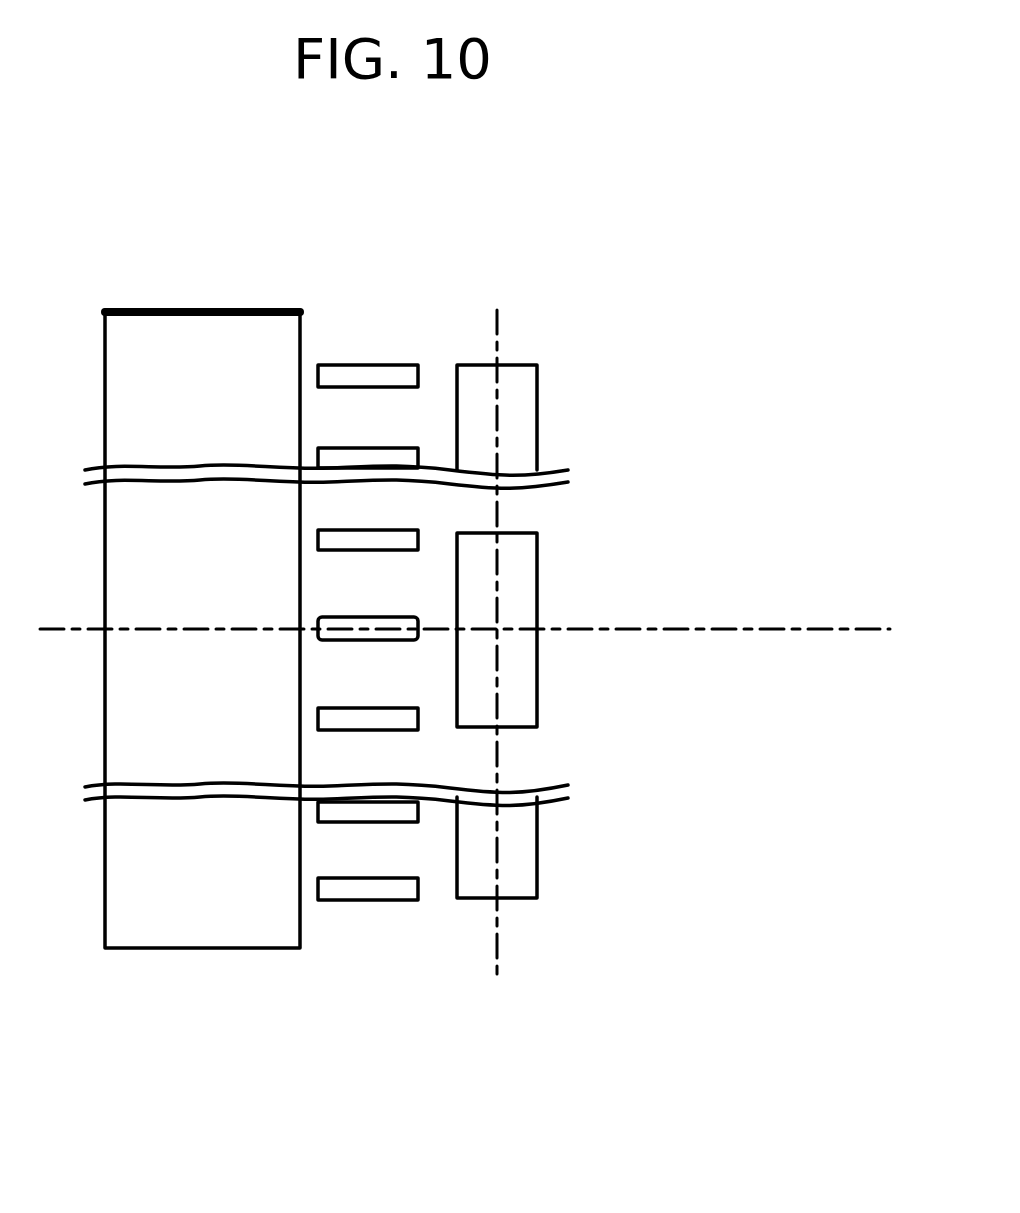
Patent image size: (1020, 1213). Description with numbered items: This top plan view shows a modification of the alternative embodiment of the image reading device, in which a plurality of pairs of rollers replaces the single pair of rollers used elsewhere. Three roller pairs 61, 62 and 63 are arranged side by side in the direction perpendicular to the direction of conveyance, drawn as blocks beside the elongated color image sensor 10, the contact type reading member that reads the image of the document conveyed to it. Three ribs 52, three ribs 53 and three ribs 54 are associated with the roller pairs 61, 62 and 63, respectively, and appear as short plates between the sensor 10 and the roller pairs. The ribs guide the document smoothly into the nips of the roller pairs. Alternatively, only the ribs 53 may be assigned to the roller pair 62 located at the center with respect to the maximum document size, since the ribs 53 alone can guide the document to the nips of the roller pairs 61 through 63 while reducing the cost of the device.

The color image sensor 10 is at (165, 318).
The ribs 52 is at (348, 366).
The ribs 53 is at (393, 530).
The ribs 54 is at (390, 902).
The roller pair 61 is at (537, 404).
The roller pair 62 is at (537, 587).
The roller pair 63 is at (525, 828).